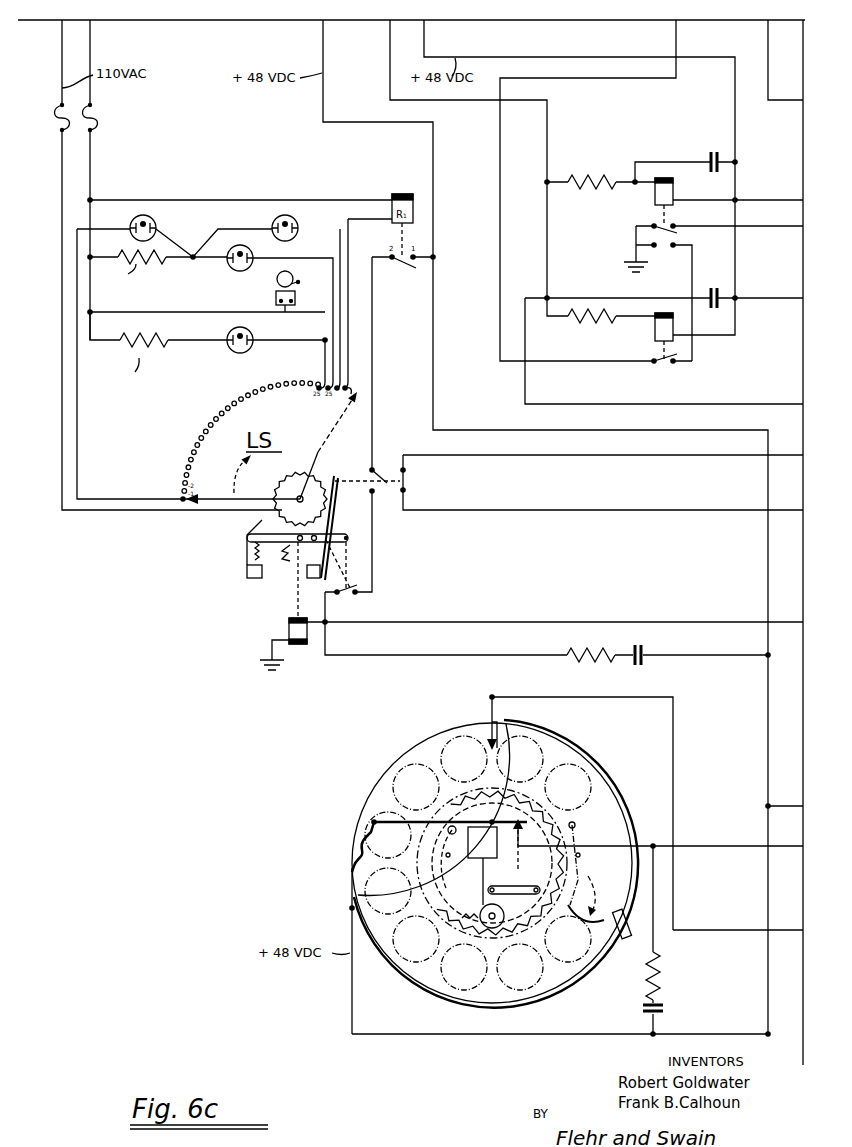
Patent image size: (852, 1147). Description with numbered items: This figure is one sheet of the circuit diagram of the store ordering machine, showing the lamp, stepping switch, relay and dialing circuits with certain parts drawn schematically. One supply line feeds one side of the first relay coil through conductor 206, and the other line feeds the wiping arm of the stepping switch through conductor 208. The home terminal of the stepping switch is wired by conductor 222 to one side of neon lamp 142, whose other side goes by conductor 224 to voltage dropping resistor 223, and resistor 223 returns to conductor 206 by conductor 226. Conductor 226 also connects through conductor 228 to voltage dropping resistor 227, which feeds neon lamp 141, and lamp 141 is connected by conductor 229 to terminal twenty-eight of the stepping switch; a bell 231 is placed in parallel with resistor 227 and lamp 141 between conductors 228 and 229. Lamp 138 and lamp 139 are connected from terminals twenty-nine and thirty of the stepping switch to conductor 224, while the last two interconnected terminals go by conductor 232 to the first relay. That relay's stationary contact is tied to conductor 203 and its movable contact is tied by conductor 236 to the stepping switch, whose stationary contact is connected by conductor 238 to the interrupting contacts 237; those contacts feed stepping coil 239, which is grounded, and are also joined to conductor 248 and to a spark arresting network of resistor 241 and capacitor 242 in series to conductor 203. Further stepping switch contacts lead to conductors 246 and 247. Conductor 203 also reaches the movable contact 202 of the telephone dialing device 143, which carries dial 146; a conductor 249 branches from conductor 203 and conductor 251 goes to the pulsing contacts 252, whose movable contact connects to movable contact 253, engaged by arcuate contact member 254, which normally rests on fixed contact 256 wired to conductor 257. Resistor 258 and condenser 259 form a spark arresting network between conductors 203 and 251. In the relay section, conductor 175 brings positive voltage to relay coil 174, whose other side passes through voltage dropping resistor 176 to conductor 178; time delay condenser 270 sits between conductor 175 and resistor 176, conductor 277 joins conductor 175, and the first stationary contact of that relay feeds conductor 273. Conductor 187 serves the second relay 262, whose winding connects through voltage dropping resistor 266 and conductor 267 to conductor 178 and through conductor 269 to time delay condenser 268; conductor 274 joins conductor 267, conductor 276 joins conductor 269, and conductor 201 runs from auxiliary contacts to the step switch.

The conductor 208 is at (58, 30).
The conductor 206 is at (92, 30).
The conductor 203 is at (321, 31).
The conductor 178 is at (388, 30).
The conductor 175 is at (424, 33).
The conductor 187 is at (677, 30).
The conductor 201 is at (770, 47).
The time delay condenser 270 is at (716, 148).
The voltage dropping resistor 176 is at (592, 174).
The relay coil 174 is at (674, 192).
The conductor 277 is at (782, 200).
The conductor 273 is at (786, 228).
The conductor 267 is at (549, 262).
The voltage dropping resistor 266 is at (585, 322).
The relay 262 is at (652, 330).
The time delay condenser 268 is at (707, 305).
The conductor 276 is at (777, 300).
The conductor 269 is at (718, 342).
The conductor 274 is at (724, 404).
The conductor 232 is at (360, 222).
The conductor 236 is at (374, 360).
The conductor 246 is at (618, 456).
The conductor 247 is at (618, 511).
The conductor 238 is at (374, 545).
The line switch contacts 237 is at (354, 596).
The stepping coil 239 is at (289, 628).
The conductor 248 is at (556, 620).
The resistor 241 is at (570, 660).
The capacitor 242 is at (640, 666).
The conductor 249 is at (786, 800).
The conductor 251 is at (738, 846).
The fixed contact 256 is at (486, 710).
The conductor 257 is at (740, 932).
The resistor 258 is at (660, 976).
The condenser 259 is at (662, 1008).
The movable contact 202 is at (350, 897).
The movable contact 253 is at (366, 840).
The pulsing contacts 252 is at (510, 812).
The telephone dialing device 143 is at (420, 736).
The dial 146 is at (382, 790).
The arcuate contact member 254 is at (418, 994).
The conductor 226 is at (88, 218).
The conductor 222 is at (78, 442).
The neon lamp 142 is at (130, 225).
The conductor 224 is at (182, 246).
The lamp 139 is at (271, 220).
The voltage dropping resistor 223 is at (152, 268).
The lamp 138 is at (234, 270).
The bell 231 is at (276, 298).
The conductor 228 is at (90, 301).
The voltage dropping resistor 227 is at (152, 348).
The neon lamp 141 is at (228, 350).
The conductor 229 is at (276, 339).